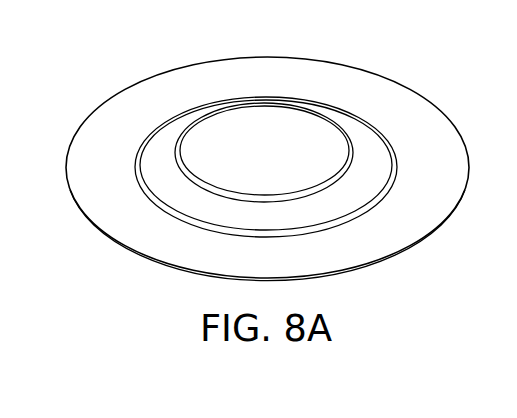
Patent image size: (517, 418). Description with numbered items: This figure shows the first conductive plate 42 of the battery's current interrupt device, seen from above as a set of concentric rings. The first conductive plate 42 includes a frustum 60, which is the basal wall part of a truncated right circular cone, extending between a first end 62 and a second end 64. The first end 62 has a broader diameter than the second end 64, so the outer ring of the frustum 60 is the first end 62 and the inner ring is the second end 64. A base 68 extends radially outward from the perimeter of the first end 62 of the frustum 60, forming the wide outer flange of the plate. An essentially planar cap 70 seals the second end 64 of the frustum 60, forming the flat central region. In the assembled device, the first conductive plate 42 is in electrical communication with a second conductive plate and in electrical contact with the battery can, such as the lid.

The first conductive plate 42 is at (169, 63).
The frustum 60 is at (250, 226).
The first end 62 is at (392, 167).
The second end 64 is at (327, 116).
The base 68 is at (115, 176).
The essentially planar cap 70 is at (252, 162).